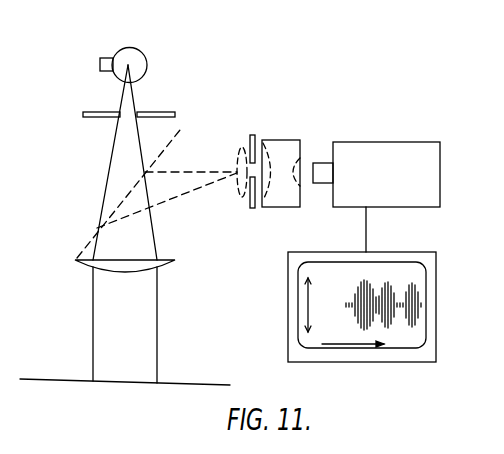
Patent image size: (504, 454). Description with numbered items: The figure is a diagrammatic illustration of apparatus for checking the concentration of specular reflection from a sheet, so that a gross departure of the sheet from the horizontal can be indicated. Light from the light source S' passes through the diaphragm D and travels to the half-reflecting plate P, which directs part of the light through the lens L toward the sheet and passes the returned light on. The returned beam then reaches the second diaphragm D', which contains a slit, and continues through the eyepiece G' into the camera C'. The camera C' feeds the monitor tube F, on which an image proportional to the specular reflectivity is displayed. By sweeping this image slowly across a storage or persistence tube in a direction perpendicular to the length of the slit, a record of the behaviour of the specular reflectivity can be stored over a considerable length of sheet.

The light source S' is at (119, 47).
The diaphragm D is at (119, 100).
The half-reflecting plate P is at (125, 193).
The lens L is at (83, 263).
The second diaphragm D' is at (247, 152).
The eyepiece G' is at (294, 153).
The camera C' is at (376, 153).
The monitor tube F is at (288, 272).